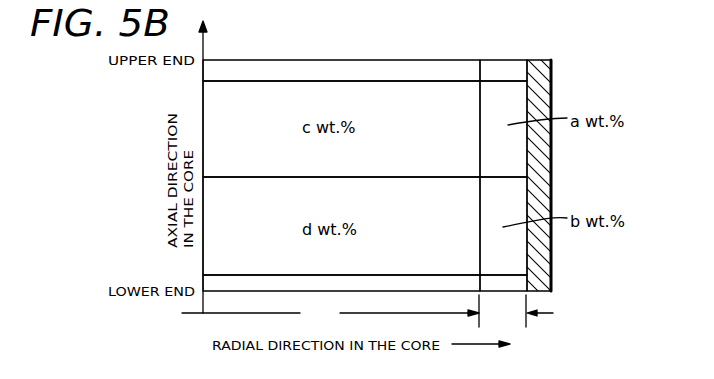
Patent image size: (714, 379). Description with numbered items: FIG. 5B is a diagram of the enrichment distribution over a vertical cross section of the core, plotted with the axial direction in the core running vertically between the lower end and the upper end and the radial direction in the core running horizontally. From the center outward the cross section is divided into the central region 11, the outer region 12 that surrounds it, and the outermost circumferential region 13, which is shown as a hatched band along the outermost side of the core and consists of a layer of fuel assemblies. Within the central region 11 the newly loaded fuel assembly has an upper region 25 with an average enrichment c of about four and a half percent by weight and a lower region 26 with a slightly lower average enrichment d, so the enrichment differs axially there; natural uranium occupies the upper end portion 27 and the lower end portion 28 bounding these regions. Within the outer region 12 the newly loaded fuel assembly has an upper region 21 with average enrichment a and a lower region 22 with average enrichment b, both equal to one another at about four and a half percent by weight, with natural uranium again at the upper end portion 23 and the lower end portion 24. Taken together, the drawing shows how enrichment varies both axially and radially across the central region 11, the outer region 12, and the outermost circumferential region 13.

The central region 11 is at (330, 313).
The outer region 12 is at (516, 311).
The outermost circumferential region 13 is at (545, 160).
The upper region 21 is at (510, 100).
The lower region 22 is at (508, 262).
The upper end portion 23 is at (505, 70).
The lower end portion 24 is at (513, 282).
The upper region 25 is at (420, 100).
The lower region 26 is at (257, 198).
The upper end portion 27 is at (342, 70).
The lower end portion 28 is at (220, 283).